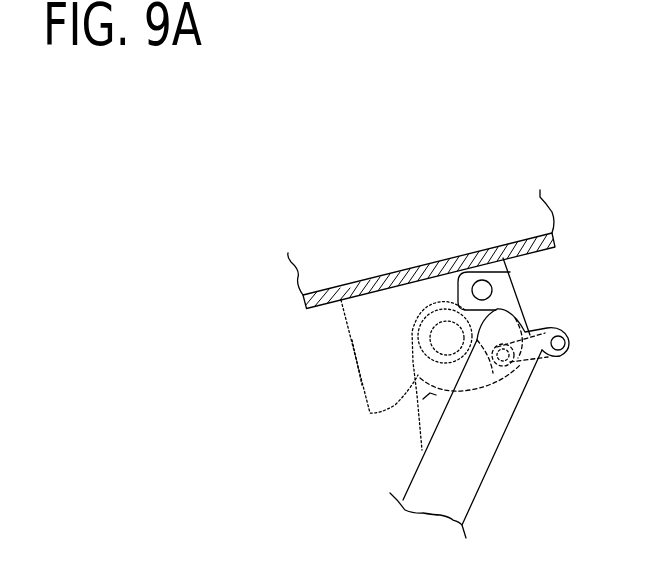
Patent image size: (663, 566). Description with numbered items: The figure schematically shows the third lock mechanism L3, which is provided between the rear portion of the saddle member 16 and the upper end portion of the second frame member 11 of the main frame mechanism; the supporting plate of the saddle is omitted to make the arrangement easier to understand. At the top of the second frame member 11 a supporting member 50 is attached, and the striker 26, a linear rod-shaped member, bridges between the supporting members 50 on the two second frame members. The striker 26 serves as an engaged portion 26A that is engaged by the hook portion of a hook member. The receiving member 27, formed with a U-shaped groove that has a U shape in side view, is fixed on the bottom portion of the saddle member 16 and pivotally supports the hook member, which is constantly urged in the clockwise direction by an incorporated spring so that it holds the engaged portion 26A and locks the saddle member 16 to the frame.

The second frame member 11 is at (490, 437).
The saddle member 16 is at (437, 243).
The striker 26 is at (372, 333).
The engaged portion 26A is at (447, 340).
The receiving member 27 is at (373, 370).
The supporting member 50 is at (422, 403).
The third lock mechanism L3 is at (521, 165).